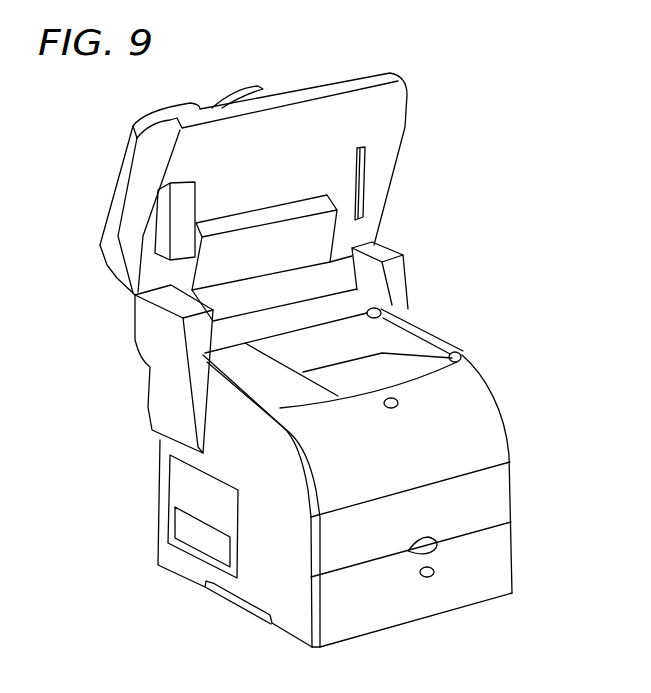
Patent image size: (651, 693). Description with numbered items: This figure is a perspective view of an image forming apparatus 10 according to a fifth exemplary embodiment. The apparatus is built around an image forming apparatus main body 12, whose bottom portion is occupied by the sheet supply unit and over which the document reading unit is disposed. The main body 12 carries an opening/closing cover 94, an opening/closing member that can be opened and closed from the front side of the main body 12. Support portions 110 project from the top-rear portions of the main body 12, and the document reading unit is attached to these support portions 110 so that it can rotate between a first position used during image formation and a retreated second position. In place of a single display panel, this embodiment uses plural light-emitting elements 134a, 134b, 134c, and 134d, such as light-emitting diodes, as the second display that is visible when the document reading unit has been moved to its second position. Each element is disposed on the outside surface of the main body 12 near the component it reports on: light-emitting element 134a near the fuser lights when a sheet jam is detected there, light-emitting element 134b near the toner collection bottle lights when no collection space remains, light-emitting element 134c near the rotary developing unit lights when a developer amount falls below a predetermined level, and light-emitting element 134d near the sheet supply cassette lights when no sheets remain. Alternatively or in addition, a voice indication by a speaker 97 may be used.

The image forming apparatus 10 is at (524, 156).
The image forming apparatus main body 12 is at (160, 475).
The opening/closing cover 94 is at (502, 448).
The speaker 97 is at (178, 532).
The support portions 110 is at (397, 277).
The light-emitting element 134a is at (405, 314).
The light-emitting element 134b is at (470, 357).
The light-emitting element 134c is at (398, 403).
The light-emitting element 134d is at (435, 572).